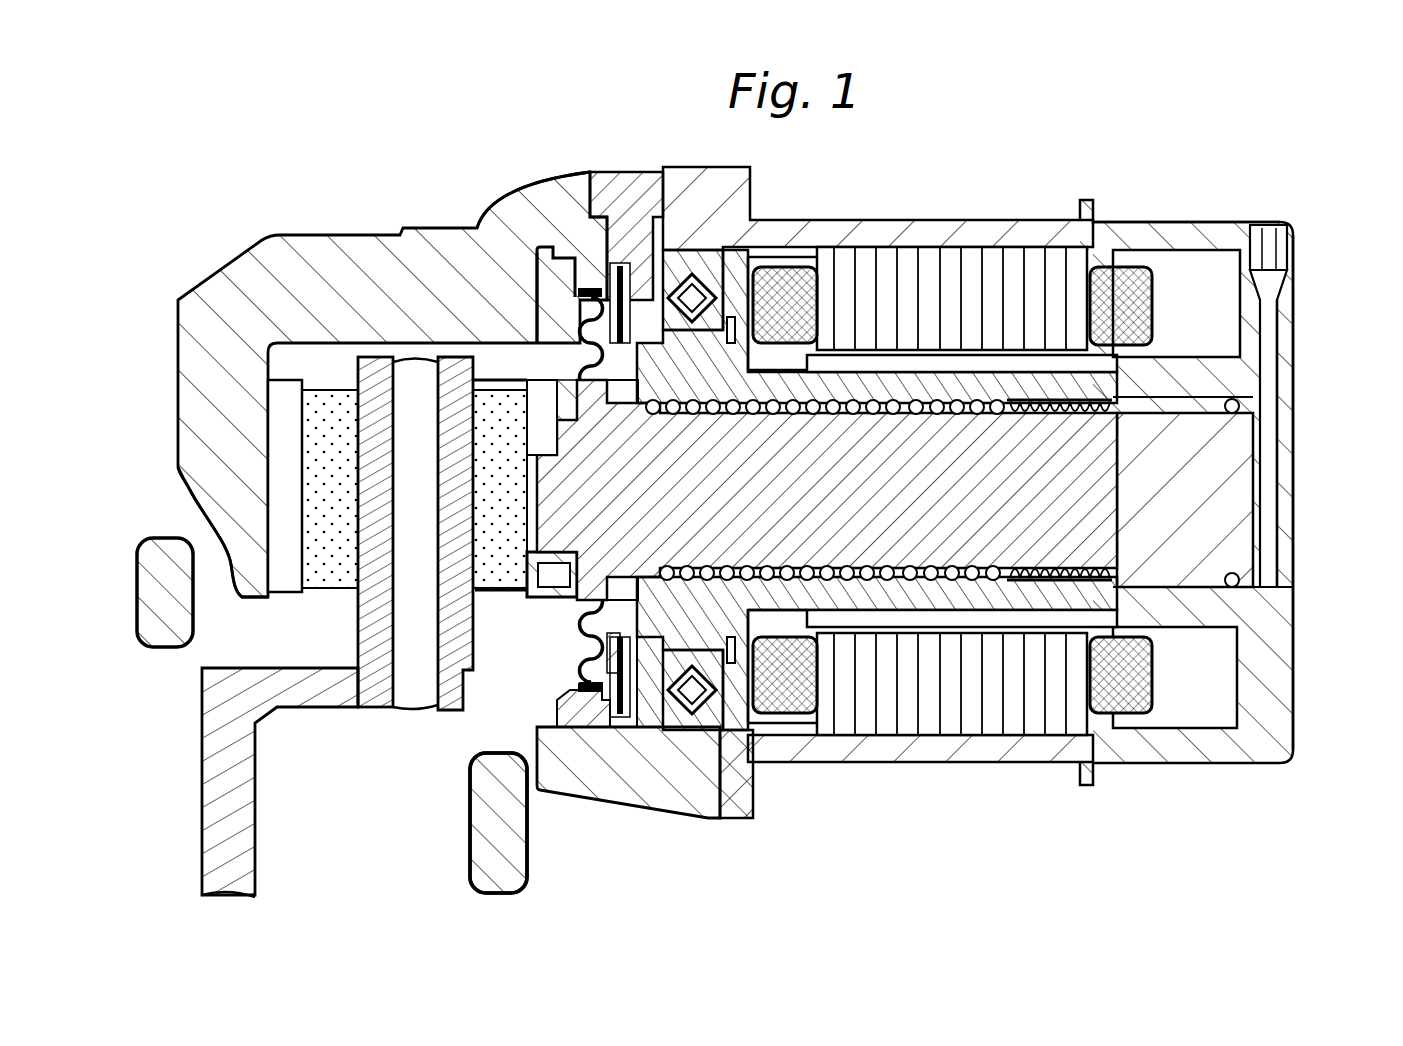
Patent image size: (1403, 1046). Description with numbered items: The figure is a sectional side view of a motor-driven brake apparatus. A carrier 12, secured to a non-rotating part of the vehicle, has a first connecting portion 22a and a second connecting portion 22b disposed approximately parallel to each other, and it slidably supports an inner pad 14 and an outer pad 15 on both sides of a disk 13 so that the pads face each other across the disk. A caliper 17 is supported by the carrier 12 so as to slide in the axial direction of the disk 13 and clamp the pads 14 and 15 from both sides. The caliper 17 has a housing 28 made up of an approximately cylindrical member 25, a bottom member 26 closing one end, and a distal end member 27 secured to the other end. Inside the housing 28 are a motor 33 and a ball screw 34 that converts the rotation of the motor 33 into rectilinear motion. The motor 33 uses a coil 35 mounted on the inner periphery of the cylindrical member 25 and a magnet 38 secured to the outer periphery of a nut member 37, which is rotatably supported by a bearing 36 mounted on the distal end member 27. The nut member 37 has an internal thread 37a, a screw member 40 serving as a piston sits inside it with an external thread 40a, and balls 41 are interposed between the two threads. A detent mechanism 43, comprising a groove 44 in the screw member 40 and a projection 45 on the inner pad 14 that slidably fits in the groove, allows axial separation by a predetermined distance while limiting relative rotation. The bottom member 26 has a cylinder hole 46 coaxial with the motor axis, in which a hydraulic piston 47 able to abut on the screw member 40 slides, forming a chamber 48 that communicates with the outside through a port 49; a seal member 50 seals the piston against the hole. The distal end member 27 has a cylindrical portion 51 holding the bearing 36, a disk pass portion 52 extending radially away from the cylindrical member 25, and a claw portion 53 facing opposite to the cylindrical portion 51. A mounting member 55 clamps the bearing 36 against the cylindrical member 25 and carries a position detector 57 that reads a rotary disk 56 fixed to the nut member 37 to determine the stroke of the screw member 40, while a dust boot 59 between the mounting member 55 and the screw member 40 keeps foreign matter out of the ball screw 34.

The carrier 12 is at (527, 857).
The disk 13 is at (425, 677).
The inner pad 14 is at (500, 573).
The outer pad 15 is at (322, 553).
The caliper 17 is at (1306, 240).
The first connecting portion 22a is at (483, 828).
The second connecting portion 22b is at (193, 617).
The cylindrical member 25 is at (960, 233).
The bottom member 26 is at (1143, 243).
The distal end member 27 is at (497, 233).
The housing 28 is at (1199, 214).
The motor 33 is at (1158, 345).
The ball screw 34 is at (777, 620).
The coil 35 is at (847, 290).
The bearing 36 is at (757, 770).
The nut member 37 is at (800, 383).
The internal thread 37a is at (890, 403).
The magnet 38 is at (927, 363).
The screw member 40 is at (1065, 490).
The external thread 40a is at (910, 578).
The balls 41 is at (971, 578).
The detent mechanism 43 is at (585, 682).
The groove 44 is at (570, 580).
The projection 45 is at (570, 618).
The cylinder hole 46 is at (1212, 400).
The hydraulic piston 47 is at (1210, 500).
The chamber 48 is at (1267, 518).
The port 49 is at (1267, 243).
The seal member 50 is at (1231, 588).
The cylindrical portion 51 is at (707, 807).
The disk pass portion 52 is at (380, 253).
The claw portion 53 is at (190, 447).
The mounting member 55 is at (585, 260).
The rotary disk 56 is at (640, 250).
The position detector 57 is at (628, 222).
The dust boot 59 is at (565, 335).